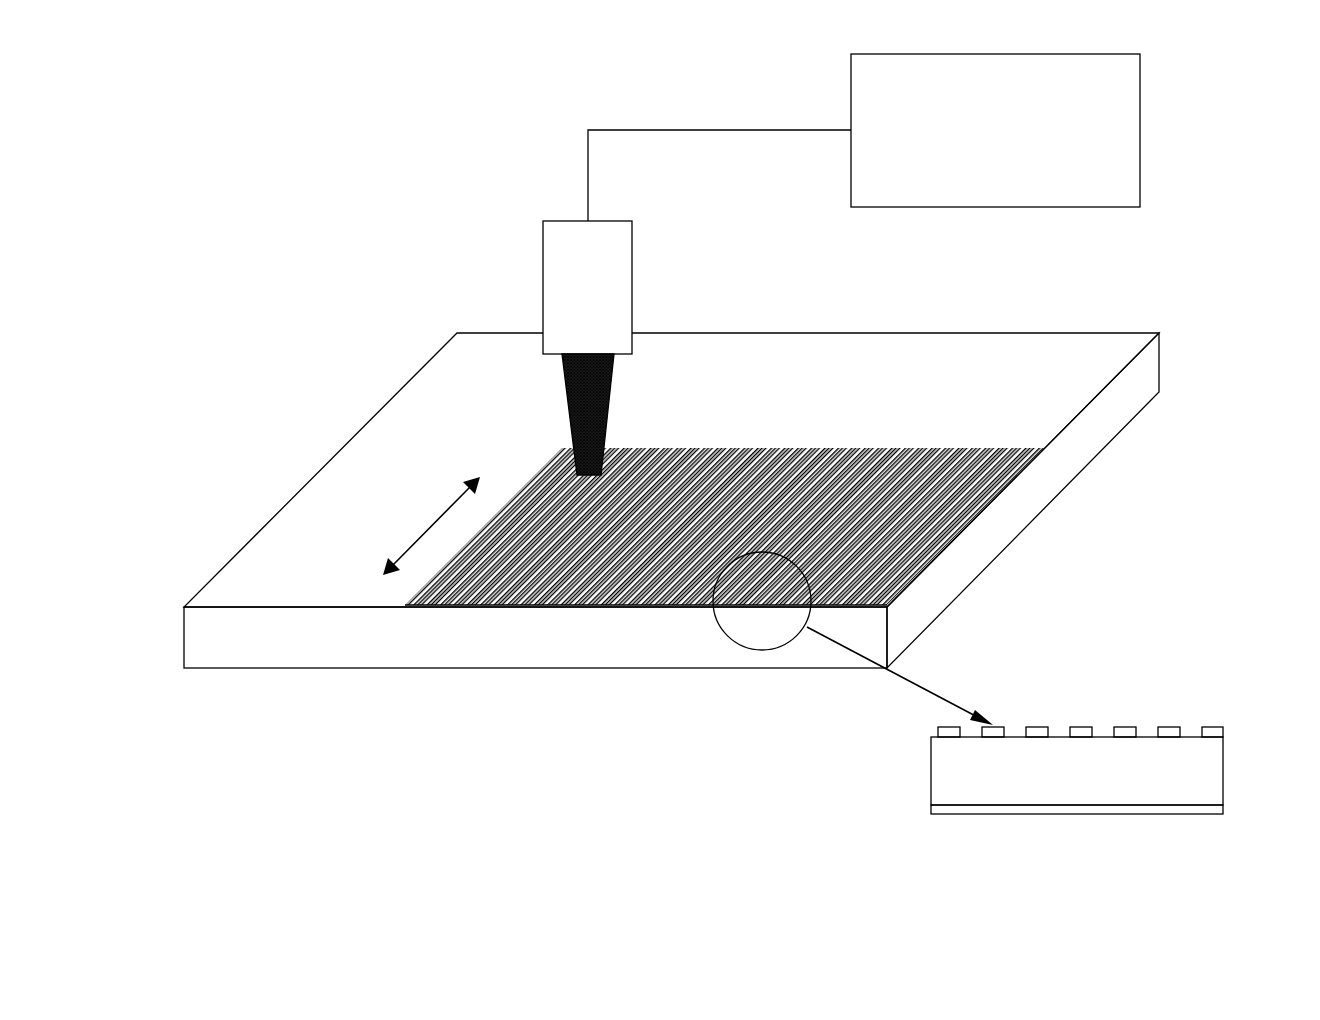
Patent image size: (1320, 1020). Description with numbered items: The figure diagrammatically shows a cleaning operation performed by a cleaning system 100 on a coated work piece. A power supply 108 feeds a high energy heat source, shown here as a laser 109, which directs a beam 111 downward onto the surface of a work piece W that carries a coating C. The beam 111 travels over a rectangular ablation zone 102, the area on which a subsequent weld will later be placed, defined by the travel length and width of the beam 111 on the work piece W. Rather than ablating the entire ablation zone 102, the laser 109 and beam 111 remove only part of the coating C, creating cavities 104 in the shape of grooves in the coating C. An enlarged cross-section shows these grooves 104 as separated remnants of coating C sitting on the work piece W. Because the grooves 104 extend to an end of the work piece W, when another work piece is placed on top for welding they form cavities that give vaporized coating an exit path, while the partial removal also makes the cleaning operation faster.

The cleaning system 100 is at (355, 143).
The ablation zone 102 is at (795, 450).
The cavities (grooves) 104 is at (1058, 732).
The power supply 108 is at (1140, 130).
The laser (high energy heat source) 109 is at (612, 270).
The beam 111 is at (592, 398).
The coating C is at (988, 365).
The work piece W is at (1107, 413).